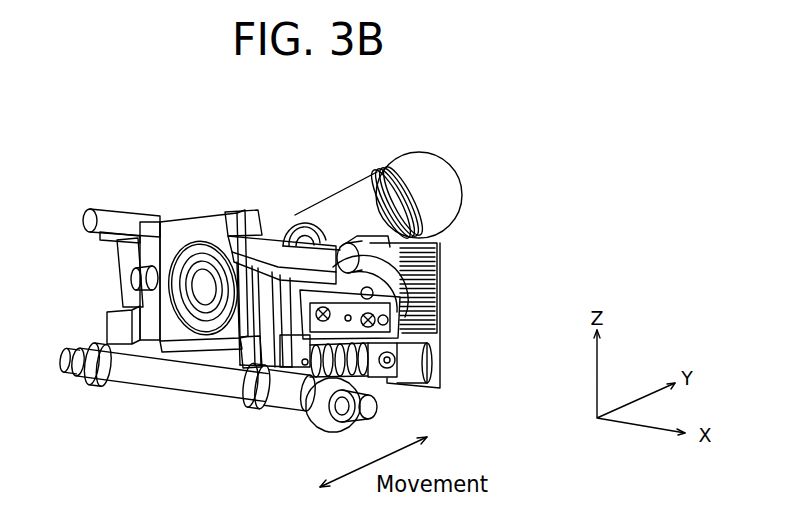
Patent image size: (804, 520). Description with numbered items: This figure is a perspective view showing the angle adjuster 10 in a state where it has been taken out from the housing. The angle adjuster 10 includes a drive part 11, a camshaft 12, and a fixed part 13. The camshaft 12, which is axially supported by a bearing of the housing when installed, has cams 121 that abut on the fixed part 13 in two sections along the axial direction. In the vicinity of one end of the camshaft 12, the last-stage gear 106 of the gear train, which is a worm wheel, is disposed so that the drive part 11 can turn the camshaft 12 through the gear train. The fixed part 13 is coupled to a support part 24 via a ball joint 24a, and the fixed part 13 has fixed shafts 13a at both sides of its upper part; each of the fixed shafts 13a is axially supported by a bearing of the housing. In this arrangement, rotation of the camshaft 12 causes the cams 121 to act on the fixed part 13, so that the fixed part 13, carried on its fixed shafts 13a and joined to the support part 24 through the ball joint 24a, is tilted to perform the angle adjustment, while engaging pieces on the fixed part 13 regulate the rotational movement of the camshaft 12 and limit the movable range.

The angle adjuster 10 is at (278, 196).
The drive part 11 is at (449, 391).
The camshaft 12 is at (197, 385).
The cam 121 is at (102, 388).
The fixed part 13 is at (178, 230).
The fixed shaft 13a is at (95, 219).
The support part 24 is at (417, 168).
The ball joint 24a is at (212, 278).
The last-stage gear 106 is at (318, 430).